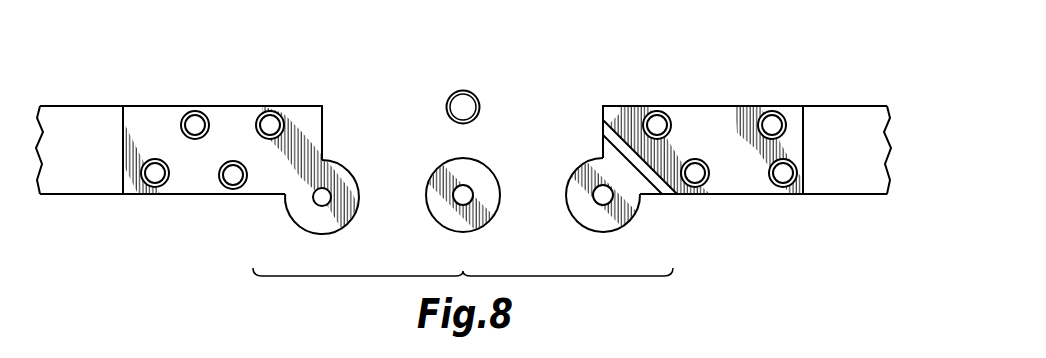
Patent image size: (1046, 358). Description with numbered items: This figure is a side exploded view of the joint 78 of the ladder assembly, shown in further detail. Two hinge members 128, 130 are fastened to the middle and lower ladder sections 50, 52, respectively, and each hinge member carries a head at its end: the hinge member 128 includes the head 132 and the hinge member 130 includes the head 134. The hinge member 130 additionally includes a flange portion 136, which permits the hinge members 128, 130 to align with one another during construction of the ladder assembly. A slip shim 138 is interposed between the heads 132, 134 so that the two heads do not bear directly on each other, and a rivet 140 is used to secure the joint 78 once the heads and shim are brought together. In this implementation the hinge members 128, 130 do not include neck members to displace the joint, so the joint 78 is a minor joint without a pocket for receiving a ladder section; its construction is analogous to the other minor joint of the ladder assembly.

The middle ladder section 50 is at (75, 106).
The lower ladder section 52 is at (852, 106).
The joint 78 is at (602, 74).
The hinge member 128 is at (172, 106).
The hinge member 130 is at (708, 106).
The head 132 is at (292, 221).
The head 134 is at (627, 223).
The flange portion 136 is at (612, 133).
The slip shim 138 is at (482, 227).
The rivet 140 is at (463, 90).